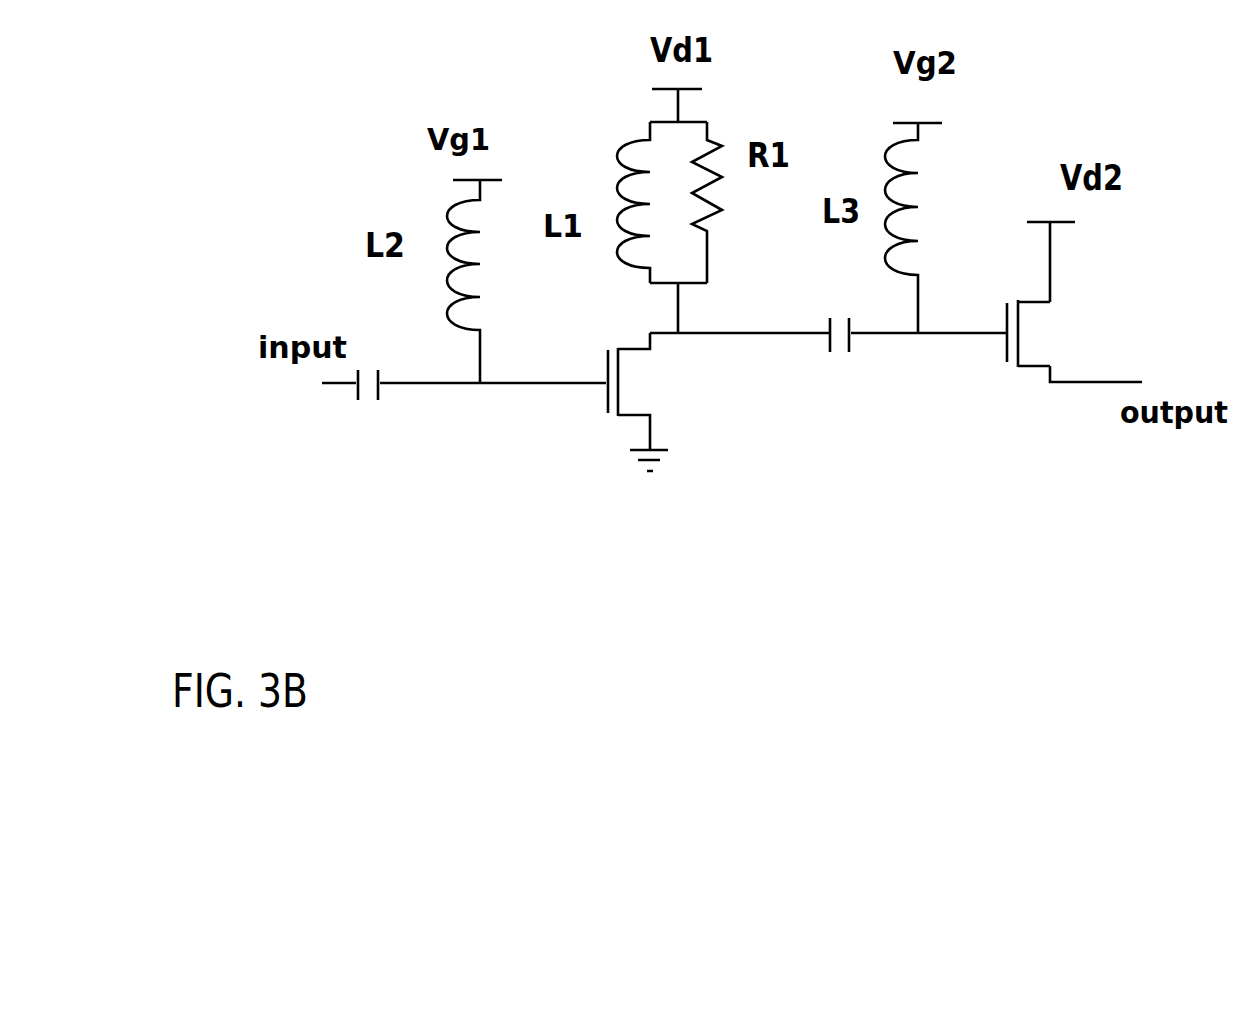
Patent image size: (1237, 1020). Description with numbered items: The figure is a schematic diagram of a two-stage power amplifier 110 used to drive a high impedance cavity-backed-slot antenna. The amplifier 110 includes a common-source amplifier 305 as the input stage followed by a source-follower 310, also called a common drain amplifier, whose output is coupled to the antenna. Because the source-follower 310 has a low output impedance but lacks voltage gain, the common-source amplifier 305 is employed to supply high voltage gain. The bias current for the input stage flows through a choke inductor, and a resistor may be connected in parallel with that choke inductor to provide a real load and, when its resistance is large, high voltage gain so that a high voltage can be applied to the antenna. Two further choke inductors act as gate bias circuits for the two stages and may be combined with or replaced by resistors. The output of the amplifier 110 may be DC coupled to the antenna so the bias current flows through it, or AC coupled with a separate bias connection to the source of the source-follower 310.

The common-source amplifier 305 is at (607, 435).
The source-follower 310 is at (1013, 392).
The amplifier 110 is at (1090, 535).